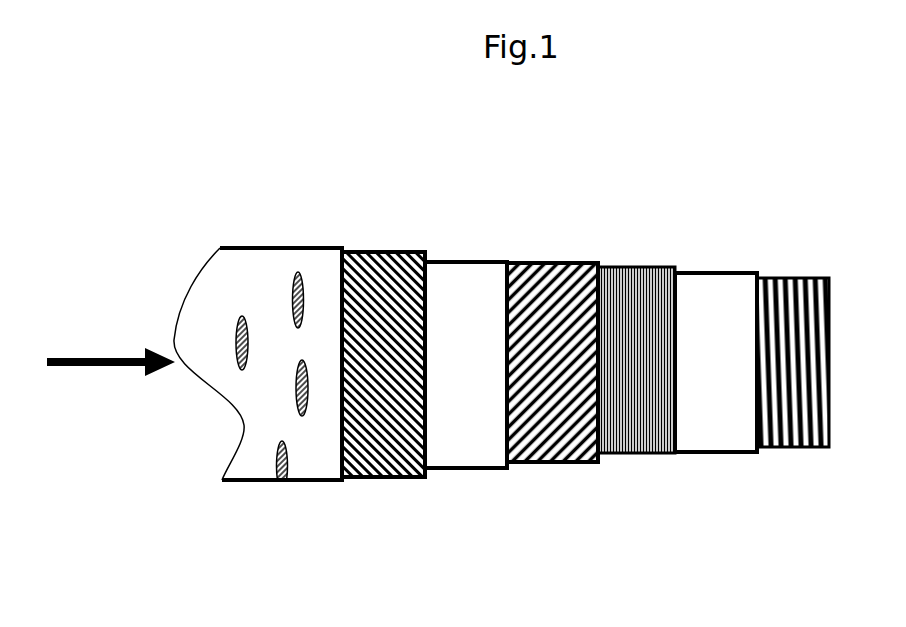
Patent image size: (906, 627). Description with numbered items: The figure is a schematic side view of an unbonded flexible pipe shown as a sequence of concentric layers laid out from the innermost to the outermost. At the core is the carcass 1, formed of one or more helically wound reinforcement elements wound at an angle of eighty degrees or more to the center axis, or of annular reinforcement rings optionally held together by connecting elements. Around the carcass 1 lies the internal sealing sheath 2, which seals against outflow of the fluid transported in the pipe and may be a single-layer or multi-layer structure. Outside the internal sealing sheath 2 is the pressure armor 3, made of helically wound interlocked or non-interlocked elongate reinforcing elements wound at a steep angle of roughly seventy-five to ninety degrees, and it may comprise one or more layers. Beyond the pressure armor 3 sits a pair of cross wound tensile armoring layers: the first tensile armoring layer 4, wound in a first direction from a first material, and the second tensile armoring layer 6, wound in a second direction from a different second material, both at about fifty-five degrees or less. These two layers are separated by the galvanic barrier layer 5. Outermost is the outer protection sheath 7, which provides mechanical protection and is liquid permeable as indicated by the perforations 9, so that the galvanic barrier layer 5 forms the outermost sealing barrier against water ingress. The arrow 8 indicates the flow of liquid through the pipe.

The carcass 1 is at (802, 425).
The internal sealing sheath 2 is at (735, 340).
The pressure armor 3 is at (637, 440).
The first tensile armoring layer 4 is at (563, 455).
The galvanic barrier layer 5 is at (459, 282).
The second tensile armoring layer 6 is at (377, 277).
The outer protection sheath 7 is at (272, 267).
The arrow 8 is at (109, 379).
The perforations 9 is at (298, 394).